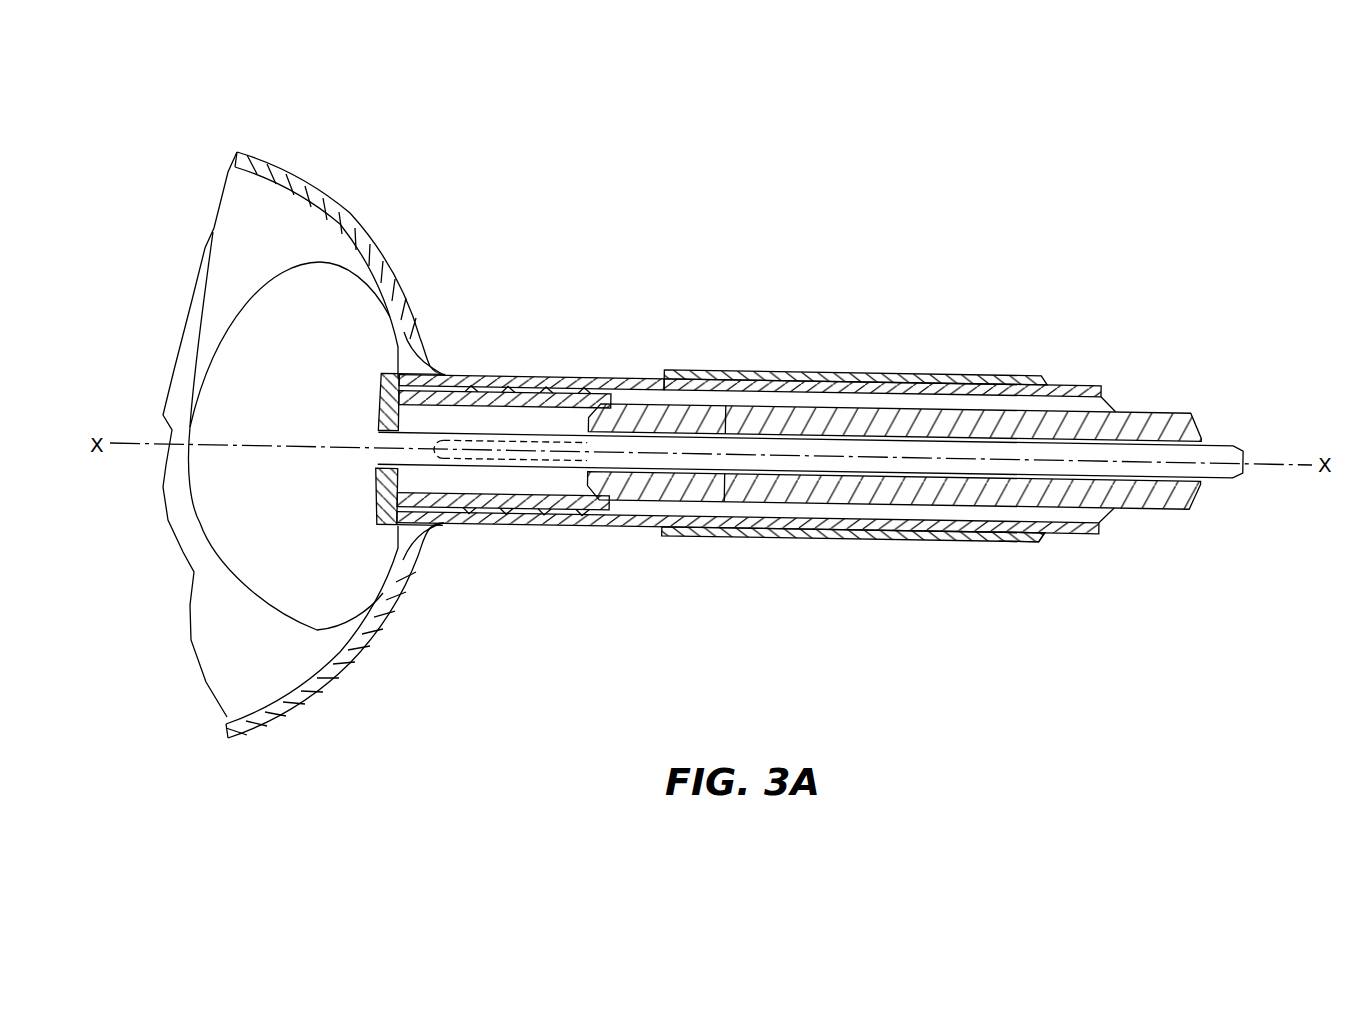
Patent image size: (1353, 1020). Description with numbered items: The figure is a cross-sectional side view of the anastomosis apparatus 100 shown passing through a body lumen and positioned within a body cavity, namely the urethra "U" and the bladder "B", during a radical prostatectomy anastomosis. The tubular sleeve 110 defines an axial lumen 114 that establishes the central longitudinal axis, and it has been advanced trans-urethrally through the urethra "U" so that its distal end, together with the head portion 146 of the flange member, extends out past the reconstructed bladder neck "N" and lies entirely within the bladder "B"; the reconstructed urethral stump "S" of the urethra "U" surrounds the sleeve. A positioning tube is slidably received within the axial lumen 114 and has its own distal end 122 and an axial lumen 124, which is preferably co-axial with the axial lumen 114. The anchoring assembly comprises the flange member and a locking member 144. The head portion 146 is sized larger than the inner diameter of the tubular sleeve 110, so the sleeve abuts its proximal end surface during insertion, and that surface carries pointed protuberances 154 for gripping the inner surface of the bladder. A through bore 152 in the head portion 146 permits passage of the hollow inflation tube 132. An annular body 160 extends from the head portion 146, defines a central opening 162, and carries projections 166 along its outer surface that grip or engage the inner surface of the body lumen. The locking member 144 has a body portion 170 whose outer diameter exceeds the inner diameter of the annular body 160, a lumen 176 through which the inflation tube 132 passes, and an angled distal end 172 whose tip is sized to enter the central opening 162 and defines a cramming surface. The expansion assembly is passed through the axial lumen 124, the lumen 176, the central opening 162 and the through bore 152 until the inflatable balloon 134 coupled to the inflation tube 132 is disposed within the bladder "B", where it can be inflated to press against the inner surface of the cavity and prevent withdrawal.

The anastomosis apparatus 100 is at (730, 126).
The bladder B is at (285, 172).
The bladder neck N is at (421, 358).
The inflatable balloon 134 is at (342, 262).
The through bore 152 is at (375, 430).
The protuberances 154 is at (417, 545).
The head portion 146 is at (390, 557).
The annular body 160 is at (452, 393).
The central opening 162 is at (513, 523).
The projections 166 is at (510, 388).
The distal end of locking member 172 is at (614, 523).
The tubular sleeve 110 is at (603, 376).
The body portion 170 is at (640, 388).
The locking member 144 is at (678, 408).
The lumen of locking member 176 is at (707, 430).
The distal end of positioning tube 122 is at (881, 408).
The axial lumen of positioning tube 124 is at (933, 477).
The inflation tube 132 is at (1141, 453).
The axial lumen of tubular sleeve 114 is at (823, 539).
The urethral stump S is at (683, 536).
The urethra U is at (1013, 545).